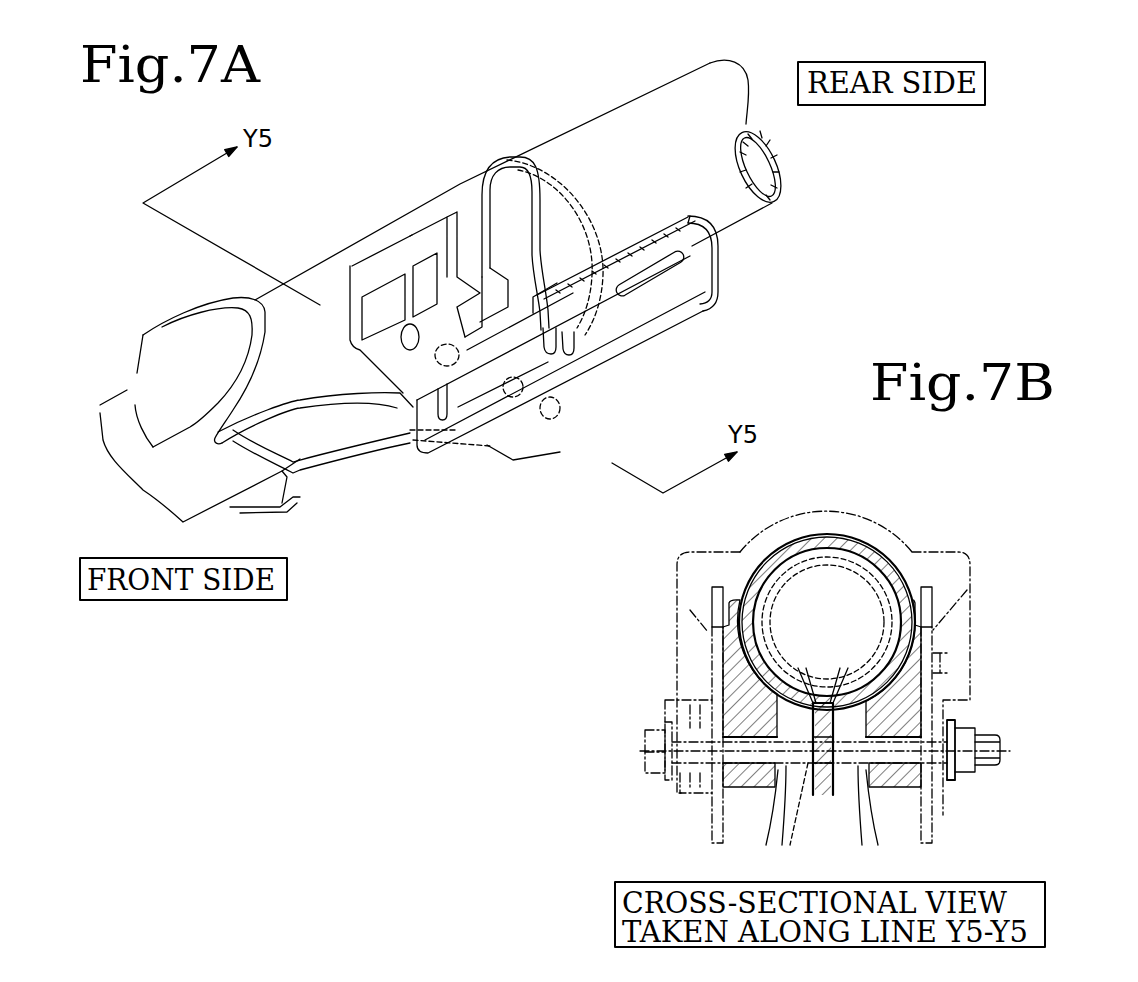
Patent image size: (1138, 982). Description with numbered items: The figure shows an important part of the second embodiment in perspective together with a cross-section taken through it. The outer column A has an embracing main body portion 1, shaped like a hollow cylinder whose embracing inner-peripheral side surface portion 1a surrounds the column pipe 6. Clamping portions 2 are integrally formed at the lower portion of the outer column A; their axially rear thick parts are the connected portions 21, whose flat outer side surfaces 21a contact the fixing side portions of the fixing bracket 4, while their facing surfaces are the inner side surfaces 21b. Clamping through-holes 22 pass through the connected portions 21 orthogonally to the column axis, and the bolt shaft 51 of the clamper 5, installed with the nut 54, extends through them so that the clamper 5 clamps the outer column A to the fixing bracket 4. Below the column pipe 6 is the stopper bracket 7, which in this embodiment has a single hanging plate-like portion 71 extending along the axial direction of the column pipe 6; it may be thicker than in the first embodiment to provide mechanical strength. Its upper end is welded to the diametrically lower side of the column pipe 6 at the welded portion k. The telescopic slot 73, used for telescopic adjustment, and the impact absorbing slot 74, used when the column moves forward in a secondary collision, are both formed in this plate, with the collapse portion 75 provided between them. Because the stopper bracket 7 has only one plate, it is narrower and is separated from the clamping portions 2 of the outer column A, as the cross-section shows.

In FIG. 7B, the embracing main body portion 1 is at (885, 552).
In FIG. 7B, the embracing inner-peripheral side surface portion 1a is at (838, 586).
In FIG. 7A, the clamping portion 2 is at (302, 403).
In FIG. 7B, the clamping portion 2 is at (752, 790).
In FIG. 7B, the fixing bracket 4 is at (940, 597).
In FIG. 7B, the clamper 5 is at (972, 723).
In FIG. 7A, the column pipe 6 is at (607, 118).
In FIG. 7B, the column pipe 6 is at (797, 557).
In FIG. 7A, the stopper bracket 7 is at (693, 312).
In FIG. 7B, the stopper bracket 7 is at (824, 802).
In FIG. 7A, the connected portion 21 is at (372, 257).
In FIG. 7B, the connected portion 21 is at (721, 638).
In FIG. 7A, the outer side surface 21a is at (418, 247).
In FIG. 7B, the inner side surface 21b is at (776, 795).
In FIG. 7A, the clamping through-hole 22 is at (400, 340).
In FIG. 7B, the clamping through-hole 22 is at (746, 763).
In FIG. 7B, the bolt shaft 51 is at (795, 811).
In FIG. 7B, the nut 54 is at (970, 778).
In FIG. 7A, the hanging plate-like portion 71 is at (710, 257).
In FIG. 7B, the hanging plate-like portion 71 is at (834, 795).
In FIG. 7A, the telescopic slot 73 is at (500, 365).
In FIG. 7B, the telescopic slot 73 is at (833, 752).
In FIG. 7A, the impact absorbing slot 74 is at (635, 288).
In FIG. 7A, the collapse portion 75 is at (558, 340).
In FIG. 7B, the collapse portion 75 is at (813, 750).
In FIG. 7A, the welded portion k is at (647, 223).
In FIG. 7B, the welded portion k is at (808, 695).
In FIG. 7A, the outer column A is at (310, 263).
In FIG. 7B, the outer column A is at (723, 605).